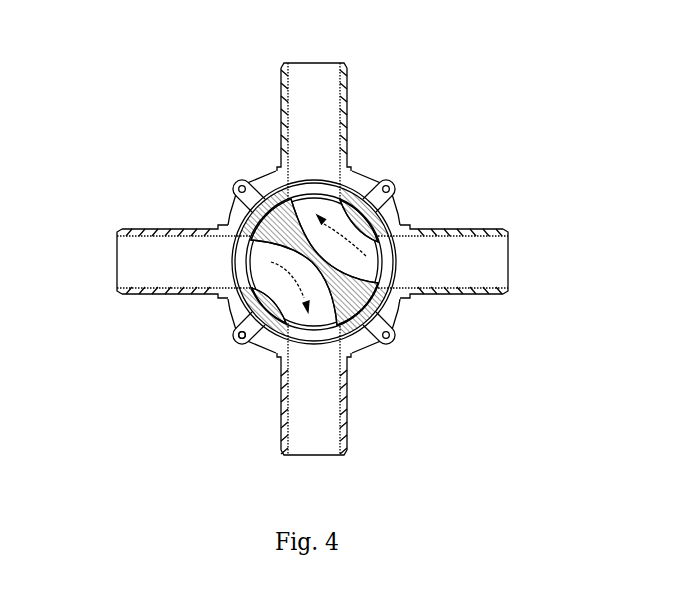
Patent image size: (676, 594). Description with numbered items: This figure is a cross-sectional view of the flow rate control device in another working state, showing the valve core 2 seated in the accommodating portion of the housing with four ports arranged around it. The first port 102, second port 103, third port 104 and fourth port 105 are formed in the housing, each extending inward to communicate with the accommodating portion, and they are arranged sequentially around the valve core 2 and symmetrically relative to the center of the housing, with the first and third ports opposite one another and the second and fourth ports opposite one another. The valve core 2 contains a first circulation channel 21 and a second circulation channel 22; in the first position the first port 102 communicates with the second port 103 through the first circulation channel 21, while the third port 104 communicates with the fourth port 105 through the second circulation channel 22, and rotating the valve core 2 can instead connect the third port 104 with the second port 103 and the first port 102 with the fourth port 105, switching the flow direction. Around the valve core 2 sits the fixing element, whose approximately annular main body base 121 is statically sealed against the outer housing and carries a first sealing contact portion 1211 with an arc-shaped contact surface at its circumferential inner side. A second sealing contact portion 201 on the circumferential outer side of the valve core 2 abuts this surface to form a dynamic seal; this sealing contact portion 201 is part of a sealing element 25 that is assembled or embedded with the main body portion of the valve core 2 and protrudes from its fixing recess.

The valve core 2 is at (358, 192).
The first circulation channel 21 is at (340, 349).
The second circulation channel 22 is at (390, 208).
The sealing element 25 is at (372, 340).
The second sealing contact portion 201 is at (394, 318).
The main body base 121 is at (234, 310).
The first sealing contact portion 1211 is at (242, 338).
The first port 102 is at (508, 271).
The second port 103 is at (318, 455).
The third port 104 is at (116, 263).
The fourth port 105 is at (318, 63).